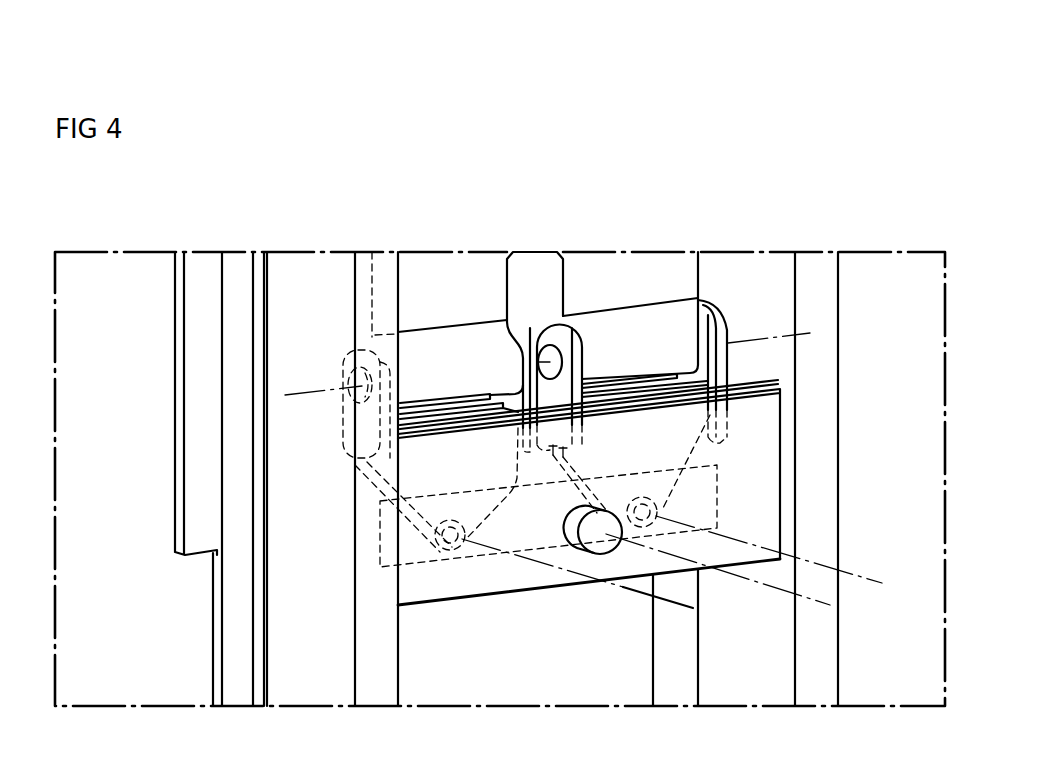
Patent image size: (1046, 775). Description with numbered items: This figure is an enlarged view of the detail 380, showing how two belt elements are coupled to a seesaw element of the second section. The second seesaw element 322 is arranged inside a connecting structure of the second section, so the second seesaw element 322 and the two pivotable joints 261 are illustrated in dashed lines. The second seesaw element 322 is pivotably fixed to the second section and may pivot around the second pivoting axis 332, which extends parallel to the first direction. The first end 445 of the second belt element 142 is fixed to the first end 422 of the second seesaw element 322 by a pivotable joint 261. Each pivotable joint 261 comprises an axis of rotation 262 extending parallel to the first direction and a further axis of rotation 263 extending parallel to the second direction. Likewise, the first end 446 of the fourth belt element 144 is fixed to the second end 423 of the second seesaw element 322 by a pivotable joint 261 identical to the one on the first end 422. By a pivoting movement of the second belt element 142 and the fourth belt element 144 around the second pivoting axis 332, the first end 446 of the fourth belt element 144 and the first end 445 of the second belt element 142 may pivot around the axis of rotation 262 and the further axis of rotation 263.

The second belt element 142 is at (505, 250).
The fourth belt element 144 is at (565, 250).
The pivotable joint 261 is at (415, 473).
The axis of rotation 262 is at (645, 592).
The further axis of rotation 263 is at (738, 343).
The second seesaw element 322 is at (690, 503).
The second pivoting axis 332 is at (782, 590).
The detail 380 is at (895, 252).
The first end of the second seesaw element 422 is at (378, 568).
The second end of the second seesaw element 423 is at (717, 472).
The first end of the second belt element 445 is at (470, 367).
The first end of the fourth belt element 446 is at (665, 357).